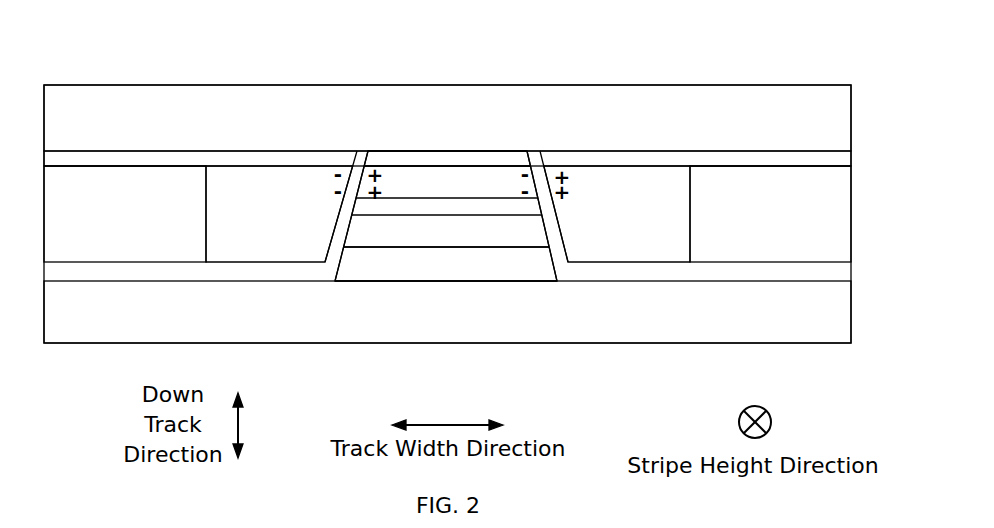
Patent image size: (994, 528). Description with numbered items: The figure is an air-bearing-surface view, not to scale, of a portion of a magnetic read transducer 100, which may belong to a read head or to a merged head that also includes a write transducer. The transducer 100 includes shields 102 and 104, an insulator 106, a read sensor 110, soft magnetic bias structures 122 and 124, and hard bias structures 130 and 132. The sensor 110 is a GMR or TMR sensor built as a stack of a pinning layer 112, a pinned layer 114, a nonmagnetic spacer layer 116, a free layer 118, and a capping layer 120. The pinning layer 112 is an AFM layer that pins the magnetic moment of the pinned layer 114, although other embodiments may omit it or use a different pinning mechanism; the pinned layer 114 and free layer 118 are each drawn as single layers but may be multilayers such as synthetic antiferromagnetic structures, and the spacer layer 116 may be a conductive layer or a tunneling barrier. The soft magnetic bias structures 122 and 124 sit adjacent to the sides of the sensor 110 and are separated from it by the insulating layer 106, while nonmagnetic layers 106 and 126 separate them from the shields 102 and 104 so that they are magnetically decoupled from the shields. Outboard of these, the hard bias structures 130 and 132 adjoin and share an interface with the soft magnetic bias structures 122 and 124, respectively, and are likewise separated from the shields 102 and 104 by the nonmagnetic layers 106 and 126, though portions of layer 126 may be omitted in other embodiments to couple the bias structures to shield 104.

The magnetic read transducer 100 is at (427, 17).
The shield 102 is at (383, 343).
The shield 104 is at (383, 85).
The insulator 106 is at (173, 281).
The read sensor 110 is at (505, 303).
The pinning layer 112 is at (352, 281).
The pinned layer 114 is at (530, 247).
The nonmagnetic spacer layer 116 is at (550, 207).
The free layer 118 is at (383, 166).
The capping layer 120 is at (497, 151).
The soft magnetic bias structure 122 is at (270, 262).
The soft magnetic bias structure 124 is at (625, 262).
The nonmagnetic layer 126 is at (183, 151).
The hard bias structure 130 is at (107, 166).
The hard bias structure 132 is at (773, 166).